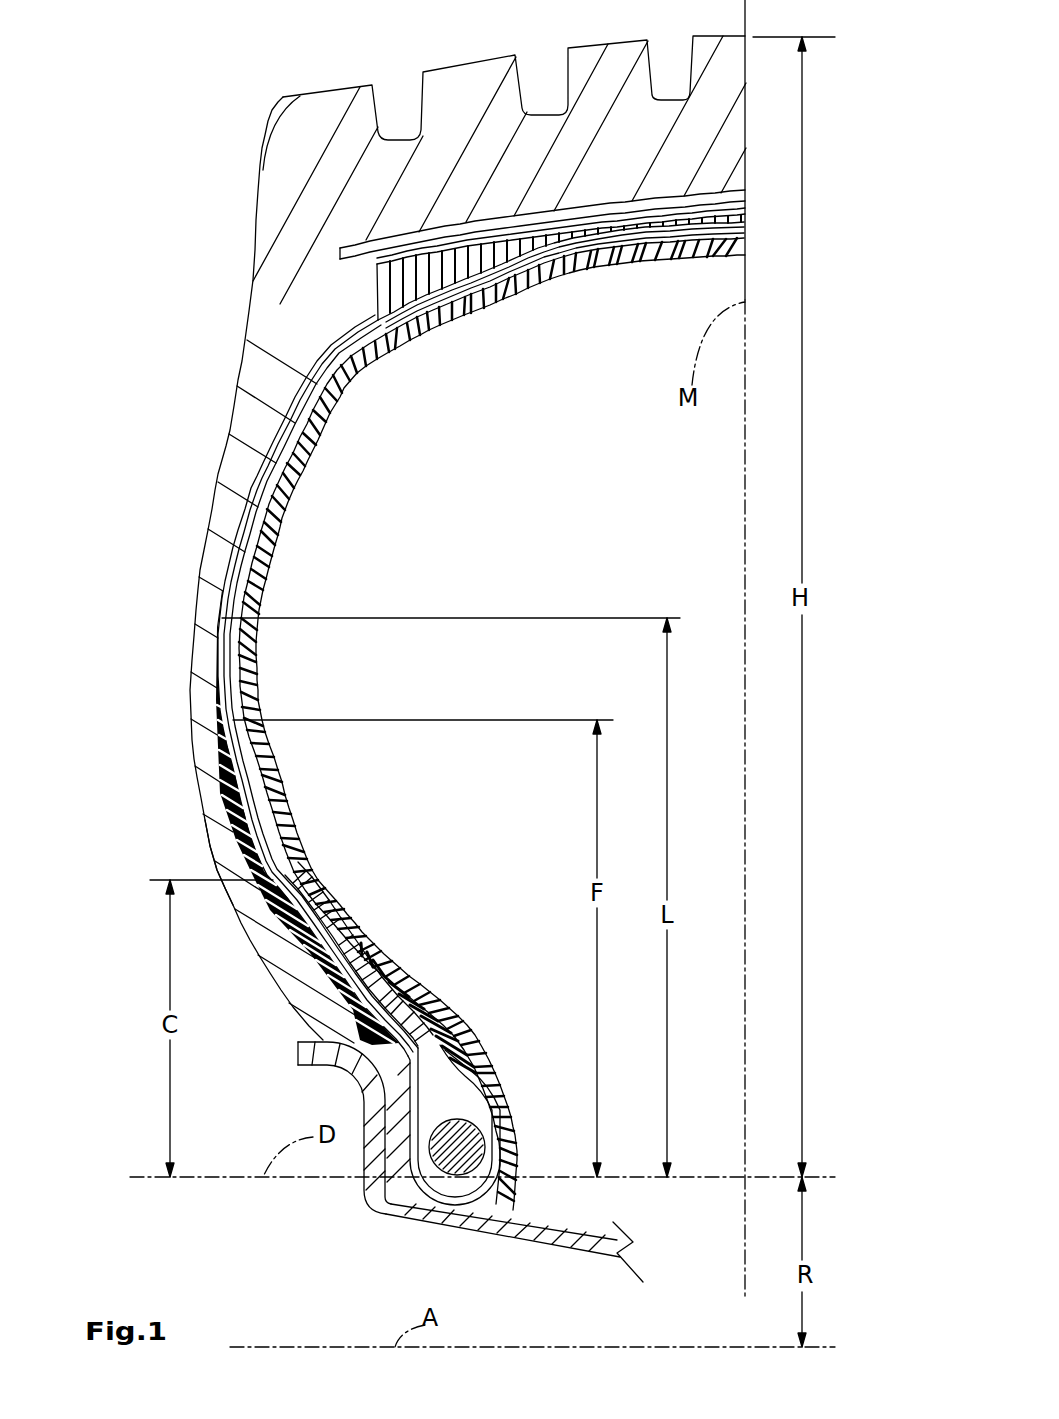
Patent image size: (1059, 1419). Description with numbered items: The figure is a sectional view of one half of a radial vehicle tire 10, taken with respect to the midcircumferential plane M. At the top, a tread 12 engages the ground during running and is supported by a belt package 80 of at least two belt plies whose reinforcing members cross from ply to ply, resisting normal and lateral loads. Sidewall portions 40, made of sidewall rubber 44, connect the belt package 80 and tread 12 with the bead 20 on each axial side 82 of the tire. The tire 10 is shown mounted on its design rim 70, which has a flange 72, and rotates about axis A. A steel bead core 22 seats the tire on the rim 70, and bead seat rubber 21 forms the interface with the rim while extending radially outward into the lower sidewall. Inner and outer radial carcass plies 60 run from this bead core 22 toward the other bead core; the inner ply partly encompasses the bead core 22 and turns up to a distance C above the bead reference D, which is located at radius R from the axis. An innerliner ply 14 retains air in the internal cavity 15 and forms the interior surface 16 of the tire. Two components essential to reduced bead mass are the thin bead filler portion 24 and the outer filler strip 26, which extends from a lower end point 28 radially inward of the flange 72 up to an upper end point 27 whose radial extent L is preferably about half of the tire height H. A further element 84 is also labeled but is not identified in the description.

The tire 10 is at (217, 387).
The tread 12 is at (462, 100).
The innerliner ply 14 is at (277, 487).
The internal cavity 15 is at (553, 538).
The interior surface 16 is at (313, 863).
The bead 20 is at (475, 1035).
The bead seat rubber 21 is at (410, 1190).
The bead core 22 is at (468, 1140).
The bead filler portion 24 is at (383, 993).
The outer filler strip 26 is at (233, 807).
The upper end point 27 is at (222, 620).
The lower end point 28 is at (417, 1090).
The sidewall portion 40 is at (178, 688).
The sidewall rubber 44 is at (210, 787).
The radial carcass plies 60 is at (355, 373).
The design rim 70 is at (363, 1187).
The flange 72 is at (300, 1047).
The belt package 80 is at (651, 188).
The axial side 82 is at (378, 332).
The belt ply 84 is at (422, 272).